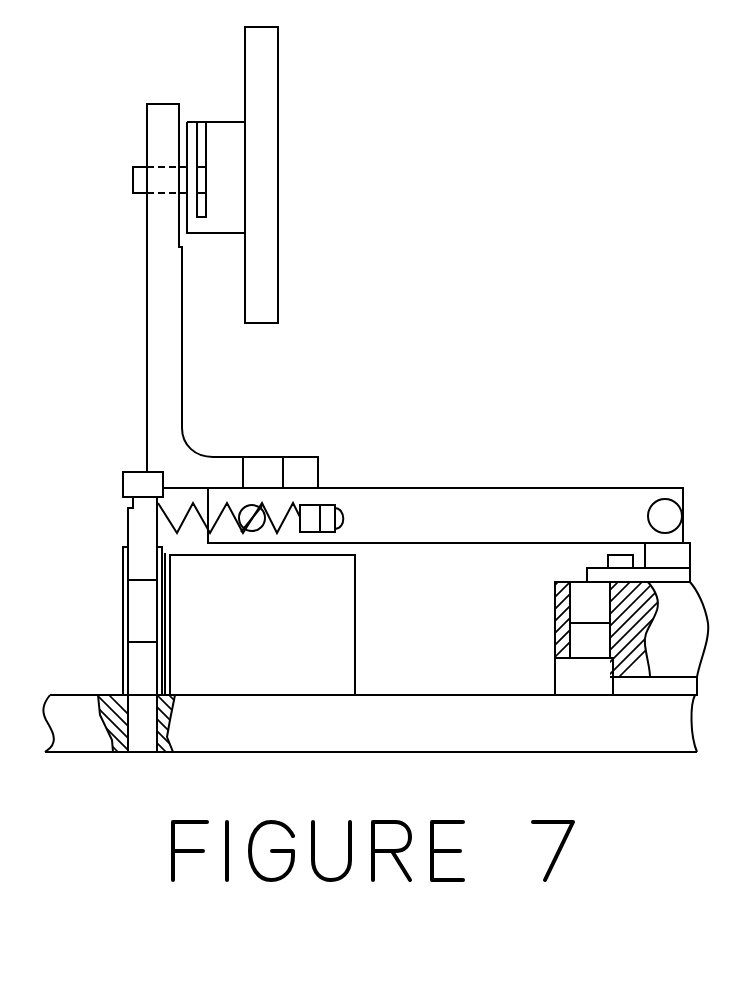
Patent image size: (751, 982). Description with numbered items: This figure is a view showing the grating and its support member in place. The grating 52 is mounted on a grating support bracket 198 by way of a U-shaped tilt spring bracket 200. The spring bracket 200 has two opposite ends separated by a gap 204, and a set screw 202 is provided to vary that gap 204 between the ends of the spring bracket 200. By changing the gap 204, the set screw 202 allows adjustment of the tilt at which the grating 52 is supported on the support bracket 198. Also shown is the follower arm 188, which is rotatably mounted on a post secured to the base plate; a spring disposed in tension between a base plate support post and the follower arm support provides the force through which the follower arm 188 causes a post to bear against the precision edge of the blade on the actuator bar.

The grating 52 is at (280, 123).
The follower arm 188 is at (407, 488).
The grating support bracket 198 is at (182, 383).
The U-shaped tilt spring bracket 200 is at (223, 122).
The set screw 202 is at (135, 182).
The gap 204 is at (202, 123).